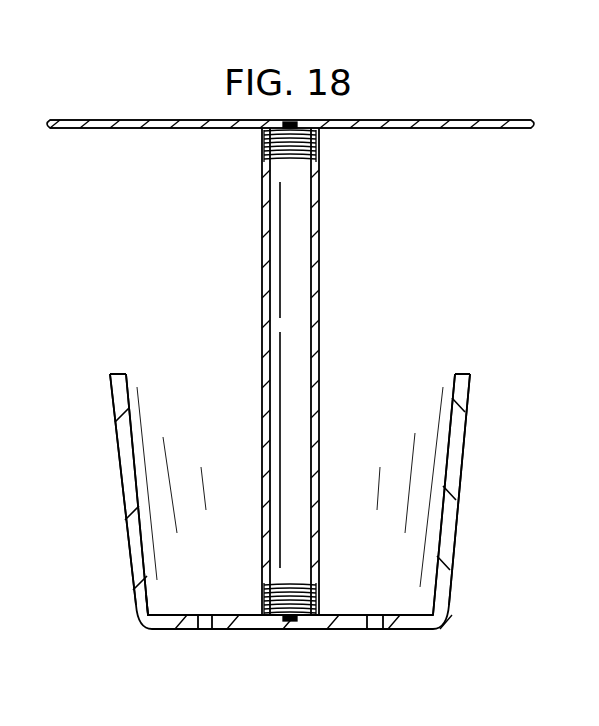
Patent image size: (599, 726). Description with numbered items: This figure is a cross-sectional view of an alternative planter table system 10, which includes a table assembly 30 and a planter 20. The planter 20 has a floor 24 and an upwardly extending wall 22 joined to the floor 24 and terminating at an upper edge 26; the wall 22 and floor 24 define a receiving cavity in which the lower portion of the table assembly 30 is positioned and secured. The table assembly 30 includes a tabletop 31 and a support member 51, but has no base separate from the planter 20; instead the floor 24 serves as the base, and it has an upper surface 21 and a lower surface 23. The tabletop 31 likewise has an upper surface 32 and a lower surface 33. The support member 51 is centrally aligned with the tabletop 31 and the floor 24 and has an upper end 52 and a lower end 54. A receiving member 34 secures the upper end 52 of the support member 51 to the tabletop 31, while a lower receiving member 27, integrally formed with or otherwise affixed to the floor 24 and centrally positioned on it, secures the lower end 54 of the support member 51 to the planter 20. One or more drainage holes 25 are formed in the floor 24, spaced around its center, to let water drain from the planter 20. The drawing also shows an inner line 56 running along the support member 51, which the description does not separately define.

The planter table system 10 is at (158, 82).
The planter 20 is at (455, 535).
The upper surface 21 is at (352, 615).
The wall 22 is at (123, 497).
The lower surface 23 is at (405, 630).
The floor 24 is at (165, 610).
The drainage holes 25 is at (200, 630).
The upper edge 26 is at (462, 373).
The lower receiving member 27 is at (292, 591).
The table assembly 30 is at (190, 263).
The tabletop 31 is at (100, 120).
The upper surface 32 is at (445, 120).
The lower surface 33 is at (420, 128).
The receiving member 34 is at (287, 158).
The support member 51 is at (320, 298).
The upper end 52 is at (317, 142).
The lower end 54 is at (263, 592).
The inner rod 56 is at (280, 323).